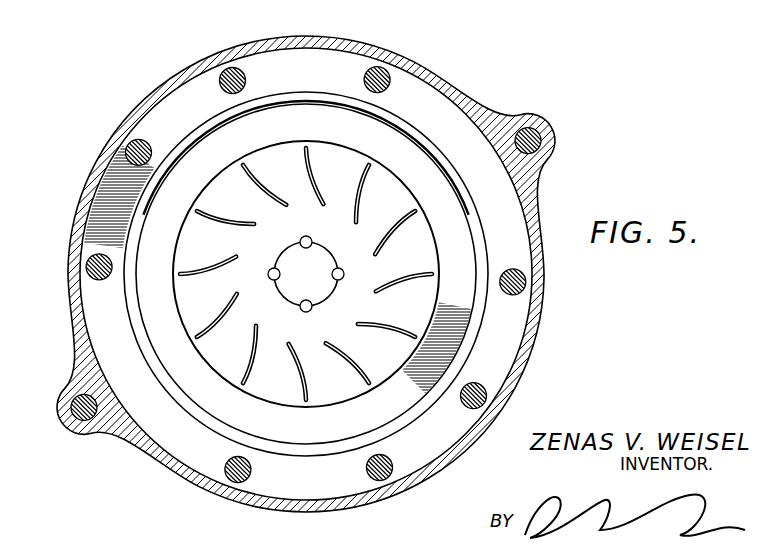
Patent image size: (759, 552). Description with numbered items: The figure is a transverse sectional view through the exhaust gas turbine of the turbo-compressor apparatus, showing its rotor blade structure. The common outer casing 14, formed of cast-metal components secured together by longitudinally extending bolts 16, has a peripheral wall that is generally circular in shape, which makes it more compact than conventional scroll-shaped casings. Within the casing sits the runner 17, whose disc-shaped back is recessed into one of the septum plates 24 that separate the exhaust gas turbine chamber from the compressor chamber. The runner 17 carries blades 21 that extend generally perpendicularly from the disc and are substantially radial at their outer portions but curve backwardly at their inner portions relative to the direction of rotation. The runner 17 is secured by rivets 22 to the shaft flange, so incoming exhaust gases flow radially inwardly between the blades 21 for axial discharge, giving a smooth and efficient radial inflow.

The outer casing 14 is at (416, 57).
The bolts 16 is at (232, 66).
The runner 17 is at (435, 237).
The blades 21 is at (224, 264).
The rivets 22 is at (312, 242).
The septum plates 24 is at (136, 317).